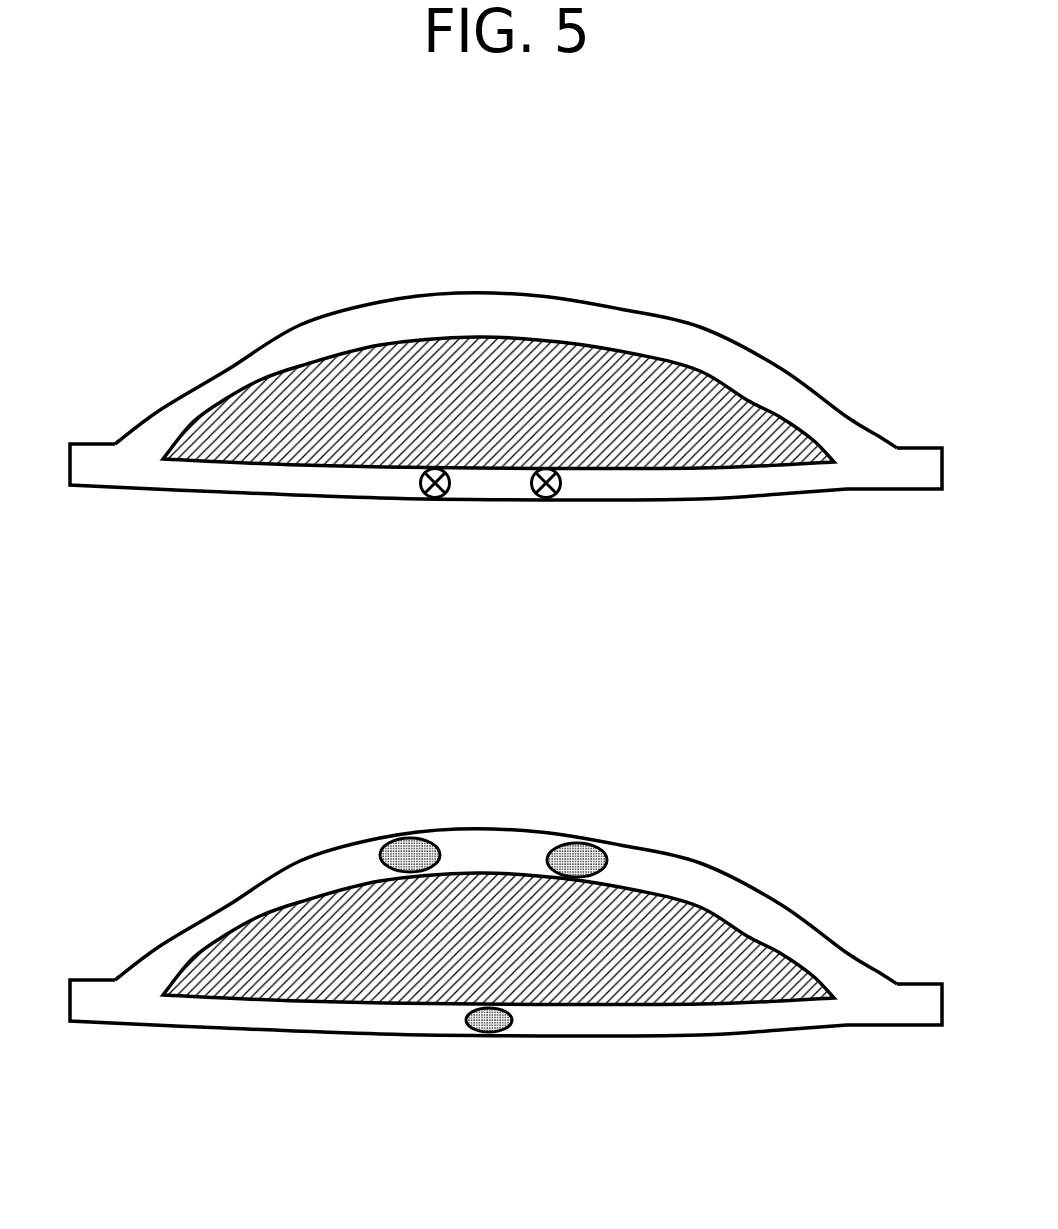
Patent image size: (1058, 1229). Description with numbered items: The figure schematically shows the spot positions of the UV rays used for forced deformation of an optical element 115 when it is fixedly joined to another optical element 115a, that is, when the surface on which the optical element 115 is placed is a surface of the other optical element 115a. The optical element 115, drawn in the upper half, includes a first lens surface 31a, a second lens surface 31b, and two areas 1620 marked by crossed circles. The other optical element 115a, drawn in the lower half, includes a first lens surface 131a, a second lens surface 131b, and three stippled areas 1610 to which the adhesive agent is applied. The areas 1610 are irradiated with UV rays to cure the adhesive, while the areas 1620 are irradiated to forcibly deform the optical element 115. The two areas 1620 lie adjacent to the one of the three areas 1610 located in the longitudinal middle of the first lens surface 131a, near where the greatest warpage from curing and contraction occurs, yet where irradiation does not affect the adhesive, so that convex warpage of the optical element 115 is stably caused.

The optical element 115 is at (506, 384).
The first lens surface 31a is at (655, 490).
The second lens surface 31b is at (702, 338).
The areas 1620 is at (532, 487).
The another optical element 115a is at (506, 919).
The first lens surface 131a is at (653, 1027).
The second lens surface 131b is at (700, 875).
The areas 1610 is at (560, 840).